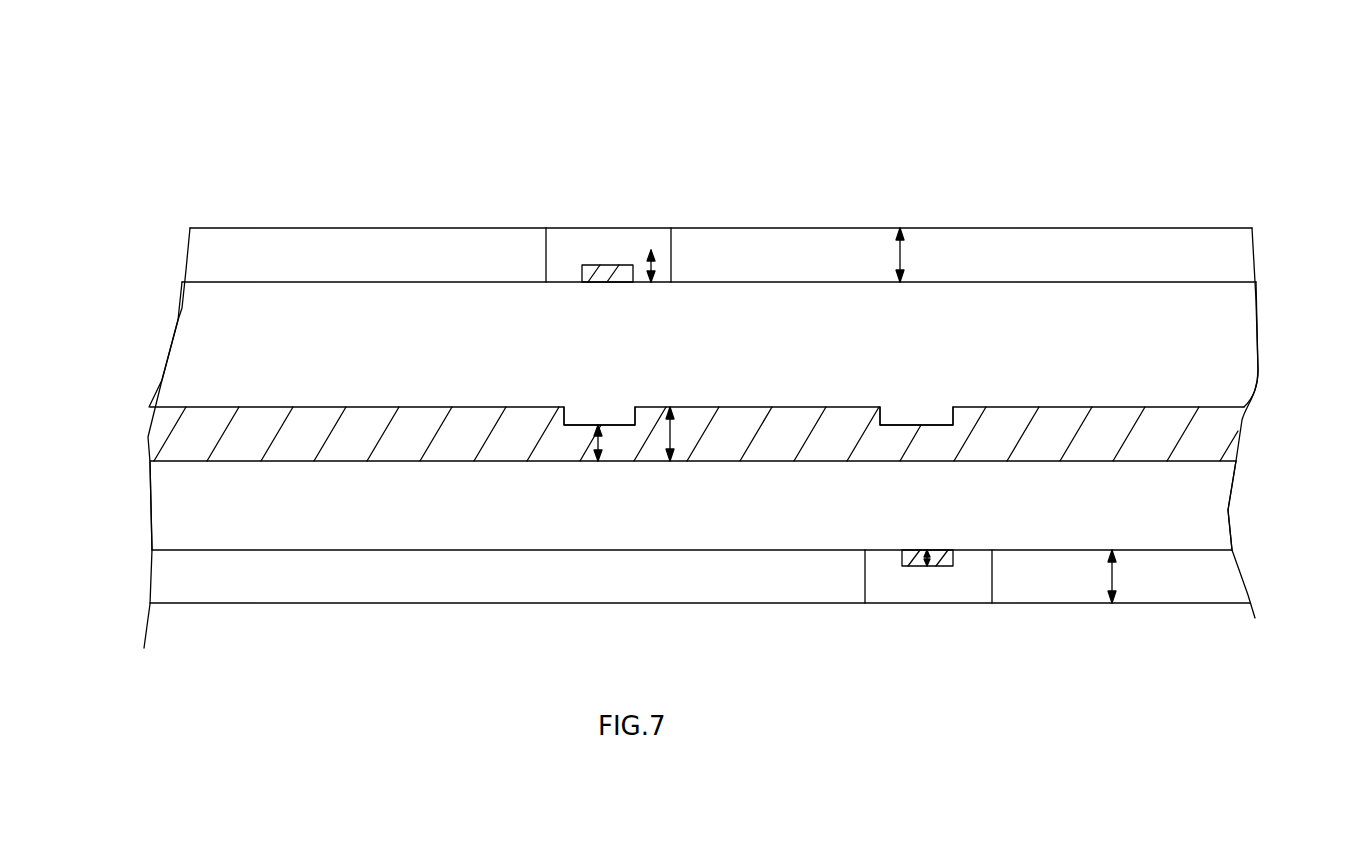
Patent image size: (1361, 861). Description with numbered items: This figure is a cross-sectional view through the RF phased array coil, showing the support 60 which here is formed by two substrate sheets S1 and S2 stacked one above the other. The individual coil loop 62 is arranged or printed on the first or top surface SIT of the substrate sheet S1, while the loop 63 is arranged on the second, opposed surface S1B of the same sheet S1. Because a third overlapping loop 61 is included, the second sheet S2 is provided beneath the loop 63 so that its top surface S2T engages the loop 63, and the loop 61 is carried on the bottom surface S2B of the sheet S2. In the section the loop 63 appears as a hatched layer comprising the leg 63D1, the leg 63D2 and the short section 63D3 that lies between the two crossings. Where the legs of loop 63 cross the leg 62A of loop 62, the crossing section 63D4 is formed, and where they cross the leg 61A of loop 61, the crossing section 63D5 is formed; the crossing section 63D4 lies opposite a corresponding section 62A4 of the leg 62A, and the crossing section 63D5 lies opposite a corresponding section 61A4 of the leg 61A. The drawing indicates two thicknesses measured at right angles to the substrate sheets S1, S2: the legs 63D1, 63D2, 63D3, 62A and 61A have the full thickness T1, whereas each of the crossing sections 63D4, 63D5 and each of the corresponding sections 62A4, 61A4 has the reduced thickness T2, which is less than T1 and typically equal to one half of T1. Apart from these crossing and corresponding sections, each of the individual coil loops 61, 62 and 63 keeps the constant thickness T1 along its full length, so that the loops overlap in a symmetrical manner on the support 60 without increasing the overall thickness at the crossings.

The support 60 is at (1280, 253).
The individual coil loop 62 is at (786, 253).
The leg of loop 62 62A is at (632, 245).
The corresponding section 62A4 is at (597, 264).
The first or top surface of substrate sheet S1 SIT is at (225, 280).
The substrate sheet S1 is at (188, 318).
The second opposed surface of substrate sheet S1 S1B is at (203, 405).
The loop 63 is at (770, 440).
The leg of loop 63 63D1 is at (352, 435).
The leg of loop 63 63D2 is at (1050, 430).
The short section 63D3 is at (834, 445).
The crossing section 63D4 is at (562, 432).
The crossing section 63D5 is at (912, 422).
The top surface of sheet S2 S2T is at (317, 462).
The second sheet S2 is at (176, 512).
The bottom surface of sheet S2 S2B is at (397, 553).
The individual coil loop 61 is at (1005, 578).
The leg of loop 61 61A is at (942, 588).
The corresponding section 61A4 is at (977, 518).
The thickness T1 is at (907, 257).
The thickness T2 is at (668, 262).